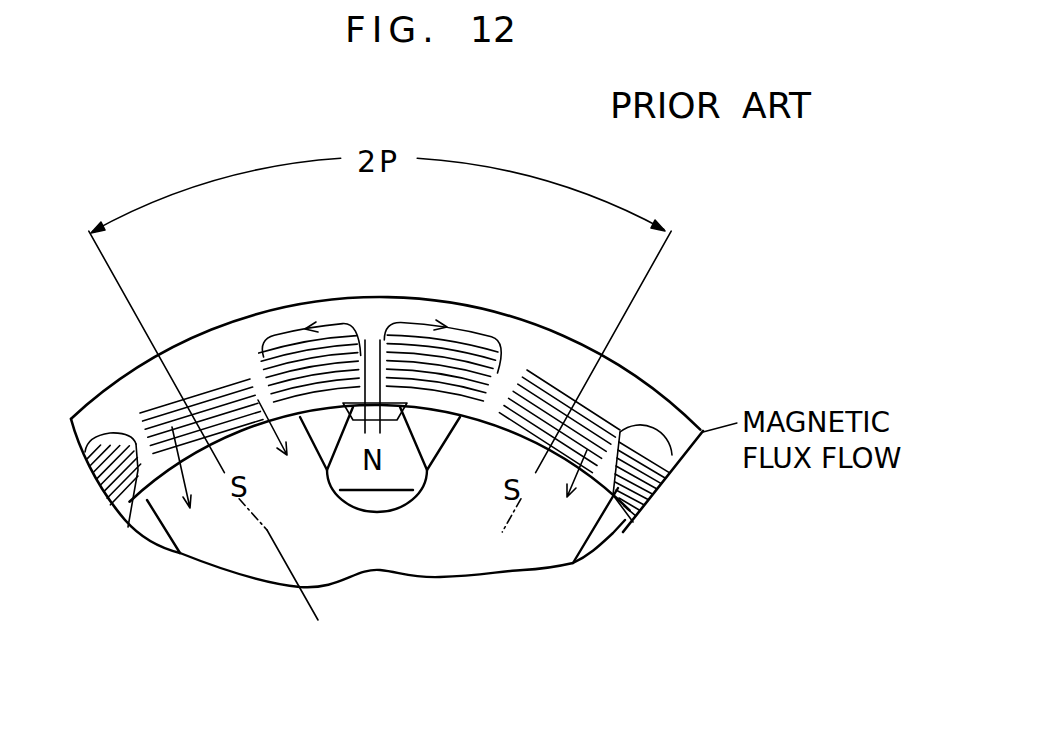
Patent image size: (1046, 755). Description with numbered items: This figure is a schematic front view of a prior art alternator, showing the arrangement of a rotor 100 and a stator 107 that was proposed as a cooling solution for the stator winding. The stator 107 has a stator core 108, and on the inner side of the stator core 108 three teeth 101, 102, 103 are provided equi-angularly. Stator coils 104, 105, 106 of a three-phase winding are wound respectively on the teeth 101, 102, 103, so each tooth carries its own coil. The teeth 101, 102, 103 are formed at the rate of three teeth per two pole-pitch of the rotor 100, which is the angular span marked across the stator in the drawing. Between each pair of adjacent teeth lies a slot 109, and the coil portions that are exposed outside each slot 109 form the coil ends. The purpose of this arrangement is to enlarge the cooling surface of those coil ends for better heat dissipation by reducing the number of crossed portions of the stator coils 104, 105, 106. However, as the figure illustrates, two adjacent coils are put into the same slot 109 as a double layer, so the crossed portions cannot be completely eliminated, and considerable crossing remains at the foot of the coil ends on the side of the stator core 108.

The rotor 100 is at (524, 566).
The tooth 101 is at (263, 430).
The tooth 102 is at (327, 470).
The tooth 103 is at (482, 460).
The stator coil 104 is at (160, 405).
The stator coil 105 is at (467, 348).
The stator coil 106 is at (473, 444).
The stator 107 is at (660, 382).
The stator core 108 is at (605, 375).
The slot 109 is at (210, 392).